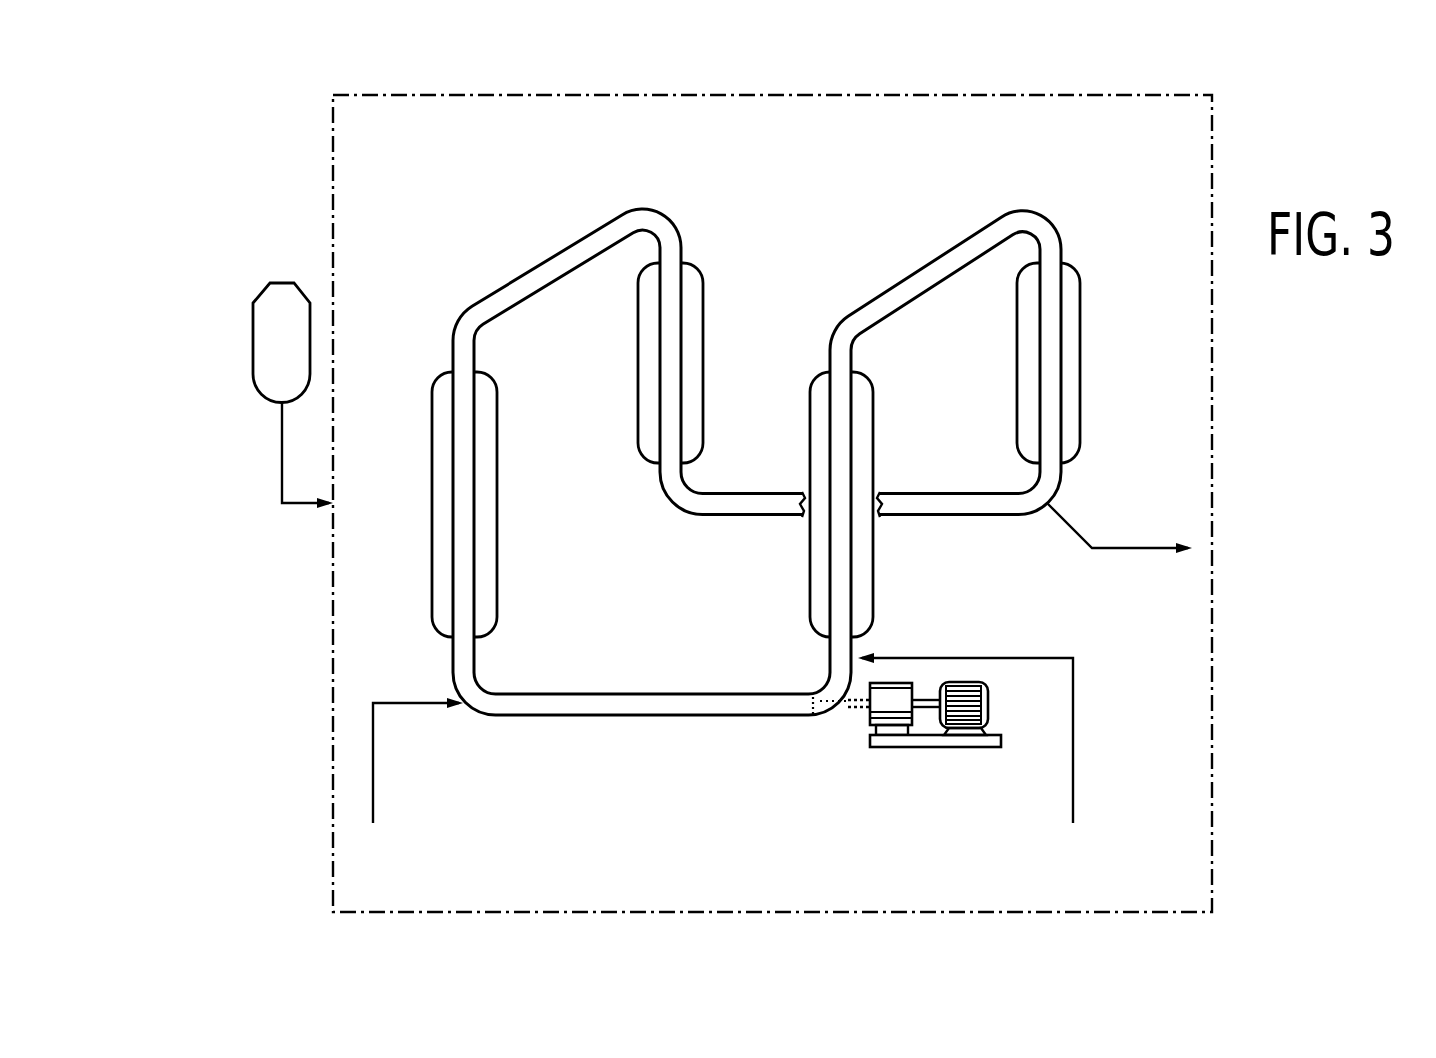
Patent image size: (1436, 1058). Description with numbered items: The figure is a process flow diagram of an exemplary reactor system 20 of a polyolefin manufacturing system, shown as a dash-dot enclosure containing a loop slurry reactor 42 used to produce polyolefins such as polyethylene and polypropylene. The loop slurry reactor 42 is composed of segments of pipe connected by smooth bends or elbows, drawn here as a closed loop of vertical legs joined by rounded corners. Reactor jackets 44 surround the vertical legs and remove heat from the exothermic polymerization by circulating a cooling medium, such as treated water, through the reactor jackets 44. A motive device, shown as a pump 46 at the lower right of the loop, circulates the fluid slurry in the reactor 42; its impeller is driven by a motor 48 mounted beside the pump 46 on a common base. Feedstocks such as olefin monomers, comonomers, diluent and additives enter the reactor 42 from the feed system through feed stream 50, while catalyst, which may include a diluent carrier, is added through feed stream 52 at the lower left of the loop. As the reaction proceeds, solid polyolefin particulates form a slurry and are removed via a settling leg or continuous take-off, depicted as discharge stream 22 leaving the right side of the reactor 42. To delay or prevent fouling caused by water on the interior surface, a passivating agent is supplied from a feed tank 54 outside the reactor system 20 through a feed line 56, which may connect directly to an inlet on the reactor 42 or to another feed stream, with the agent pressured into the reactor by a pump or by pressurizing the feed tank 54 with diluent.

The reactor system 20 is at (578, 93).
The discharge stream 22 is at (1063, 531).
The loop slurry reactor 42 is at (918, 258).
The reactor jackets 44 is at (432, 510).
The pump 46 is at (870, 716).
The motor 48 is at (985, 712).
The feed stream 50 is at (1073, 745).
The feed stream 52 is at (373, 768).
The feed tank 54 is at (253, 346).
The feed line 56 is at (282, 457).